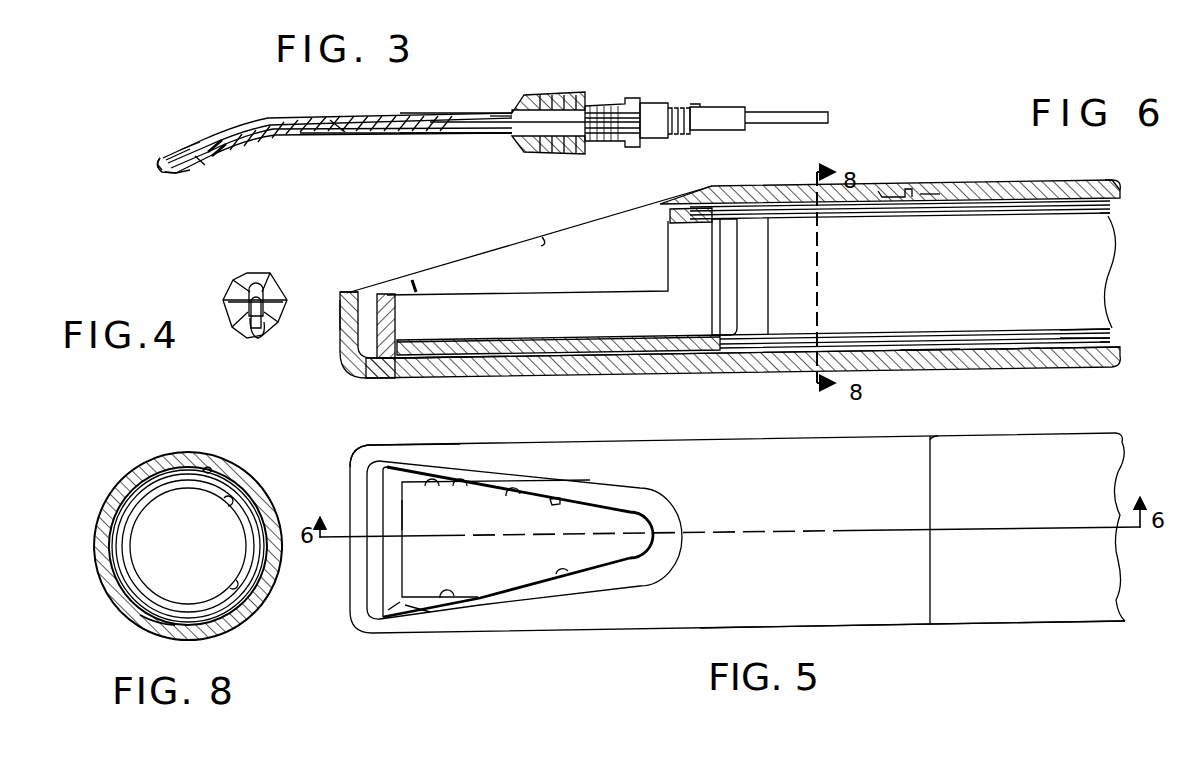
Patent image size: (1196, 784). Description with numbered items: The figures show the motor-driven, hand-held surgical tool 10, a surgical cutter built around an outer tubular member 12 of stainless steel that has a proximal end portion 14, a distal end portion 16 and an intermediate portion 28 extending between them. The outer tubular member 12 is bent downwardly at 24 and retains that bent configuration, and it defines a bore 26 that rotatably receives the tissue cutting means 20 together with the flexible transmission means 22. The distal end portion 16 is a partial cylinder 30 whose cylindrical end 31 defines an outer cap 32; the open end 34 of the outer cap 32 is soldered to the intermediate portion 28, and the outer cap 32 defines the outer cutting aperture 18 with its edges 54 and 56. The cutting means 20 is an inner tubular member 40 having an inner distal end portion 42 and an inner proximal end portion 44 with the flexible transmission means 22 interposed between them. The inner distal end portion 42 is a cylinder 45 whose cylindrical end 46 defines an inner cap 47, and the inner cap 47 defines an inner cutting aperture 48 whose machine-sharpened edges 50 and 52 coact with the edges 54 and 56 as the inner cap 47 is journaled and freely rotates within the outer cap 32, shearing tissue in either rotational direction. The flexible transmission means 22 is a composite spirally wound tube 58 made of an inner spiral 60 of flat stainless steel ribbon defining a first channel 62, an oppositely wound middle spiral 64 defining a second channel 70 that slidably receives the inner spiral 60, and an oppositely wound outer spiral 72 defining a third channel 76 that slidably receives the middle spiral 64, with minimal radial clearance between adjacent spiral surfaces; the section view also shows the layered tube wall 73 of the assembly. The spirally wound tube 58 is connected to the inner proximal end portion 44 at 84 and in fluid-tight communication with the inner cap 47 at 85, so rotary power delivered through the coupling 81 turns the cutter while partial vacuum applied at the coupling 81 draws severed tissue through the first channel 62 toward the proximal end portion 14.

In FIG. 3, the surgical tool 10 is at (444, 66).
In FIG. 6, the surgical tool 10 is at (893, 160).
In FIG. 3, the outer tubular member 12 is at (474, 136).
In FIG. 4, the outer tubular member 12 is at (270, 303).
In FIG. 6, the outer tubular member 12 is at (340, 300).
In FIG. 8, the outer tubular member 12 is at (150, 462).
In FIG. 5, the outer tubular member 12 is at (1052, 436).
In FIG. 3, the proximal end portion 14 is at (590, 124).
In FIG. 3, the distal end portion 16 is at (180, 172).
In FIG. 4, the distal end portion 16 is at (262, 330).
In FIG. 6, the distal end portion 16 is at (358, 378).
In FIG. 3, the outer cutting aperture 18 is at (166, 152).
In FIG. 4, the outer cutting aperture 18 is at (266, 312).
In FIG. 6, the outer cutting aperture 18 is at (542, 236).
In FIG. 5, the outer cutting aperture 18 is at (516, 490).
In FIG. 3, the tissue cutting means 20 is at (152, 150).
In FIG. 5, the tissue cutting means 20 is at (400, 517).
In FIG. 3, the flexible transmission means 22 is at (316, 134).
In FIG. 6, the flexible transmission means 22 is at (952, 354).
In FIG. 3, the bend 24 is at (240, 122).
In FIG. 3, the bore 26 is at (496, 116).
In FIG. 6, the bore 26 is at (945, 190).
In FIG. 3, the intermediate portion 28 is at (380, 116).
In FIG. 6, the intermediate portion 28 is at (1070, 356).
In FIG. 5, the intermediate portion 28 is at (992, 610).
In FIG. 3, the partial cylinder 30 is at (160, 172).
In FIG. 4, the partial cylinder 30 is at (246, 340).
In FIG. 6, the partial cylinder 30 is at (488, 368).
In FIG. 5, the partial cylinder 30 is at (666, 628).
In FIG. 3, the cylindrical end 31 is at (158, 170).
In FIG. 6, the cylindrical end 31 is at (352, 290).
In FIG. 5, the cylindrical end 31 is at (348, 583).
In FIG. 3, the outer cap 32 is at (200, 160).
In FIG. 6, the outer cap 32 is at (470, 376).
In FIG. 5, the outer cap 32 is at (356, 460).
In FIG. 6, the open end 34 is at (893, 186).
In FIG. 5, the open end 34 is at (922, 608).
In FIG. 3, the inner tubular member 40 is at (436, 120).
In FIG. 6, the inner tubular member 40 is at (974, 210).
In FIG. 5, the inner tubular member 40 is at (464, 566).
In FIG. 3, the inner distal end portion 42 is at (196, 142).
In FIG. 6, the inner distal end portion 42 is at (652, 354).
In FIG. 5, the inner distal end portion 42 is at (390, 585).
In FIG. 3, the inner proximal end portion 44 is at (558, 128).
In FIG. 6, the cylinder 45 is at (515, 346).
In FIG. 5, the cylinder 45 is at (428, 604).
In FIG. 6, the cylindrical end 46 is at (386, 358).
In FIG. 5, the cylindrical end 46 is at (390, 563).
In FIG. 6, the inner cap 47 is at (462, 340).
In FIG. 5, the inner cap 47 is at (392, 604).
In FIG. 6, the inner cutting aperture 48 is at (414, 280).
In FIG. 5, the inner cutting aperture 48 is at (434, 484).
In FIG. 5, the edge 50 is at (462, 484).
In FIG. 5, the edge 52 is at (448, 602).
In FIG. 5, the edge 54 is at (562, 500).
In FIG. 5, the edge 56 is at (580, 580).
In FIG. 3, the spirally wound tube 58 is at (294, 124).
In FIG. 6, the spirally wound tube 58 is at (1010, 352).
In FIG. 6, the inner spiral 60 is at (1095, 218).
In FIG. 8, the inner spiral 60 is at (136, 516).
In FIG. 6, the first channel 62 is at (1118, 343).
In FIG. 8, the first channel 62 is at (232, 504).
In FIG. 6, the middle spiral 64 is at (1108, 213).
In FIG. 8, the middle spiral 64 is at (128, 610).
In FIG. 6, the second channel 70 is at (1108, 338).
In FIG. 8, the second channel 70 is at (240, 596).
In FIG. 6, the outer spiral 72 is at (1114, 181).
In FIG. 8, the outer spiral 72 is at (190, 470).
In FIG. 6, the intermediate layer 73 is at (1098, 329).
In FIG. 8, the third channel 76 is at (212, 468).
In FIG. 3, the coupling 81 is at (795, 112).
In FIG. 3, the connection of transmission to inner proximal end portion 84 is at (408, 136).
In FIG. 3, the connection of transmission to inner cap 85 is at (214, 150).